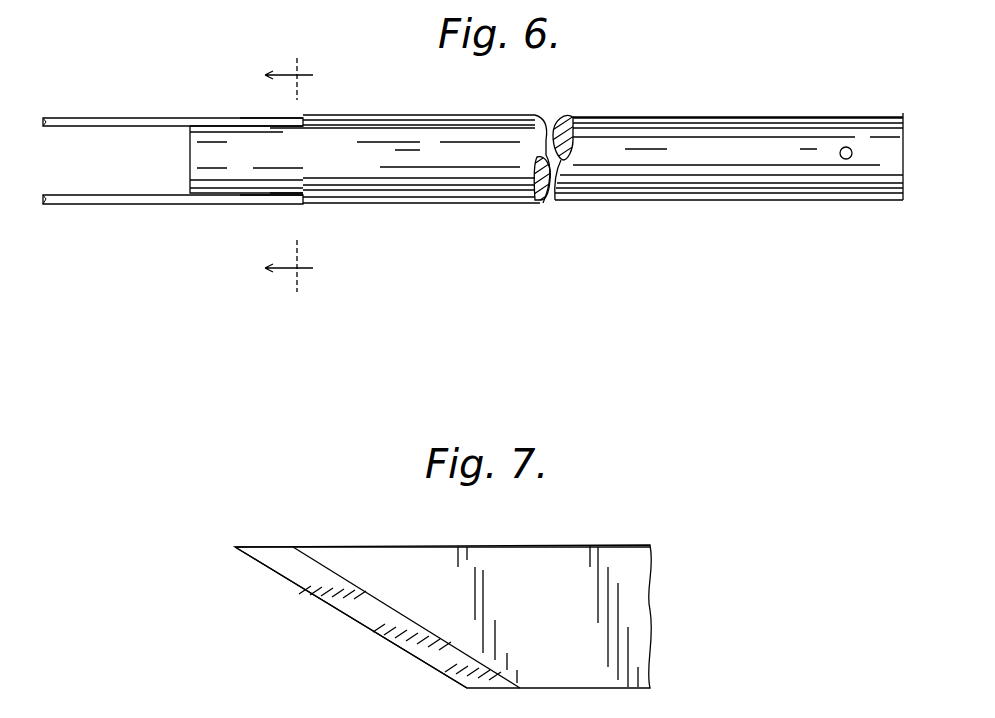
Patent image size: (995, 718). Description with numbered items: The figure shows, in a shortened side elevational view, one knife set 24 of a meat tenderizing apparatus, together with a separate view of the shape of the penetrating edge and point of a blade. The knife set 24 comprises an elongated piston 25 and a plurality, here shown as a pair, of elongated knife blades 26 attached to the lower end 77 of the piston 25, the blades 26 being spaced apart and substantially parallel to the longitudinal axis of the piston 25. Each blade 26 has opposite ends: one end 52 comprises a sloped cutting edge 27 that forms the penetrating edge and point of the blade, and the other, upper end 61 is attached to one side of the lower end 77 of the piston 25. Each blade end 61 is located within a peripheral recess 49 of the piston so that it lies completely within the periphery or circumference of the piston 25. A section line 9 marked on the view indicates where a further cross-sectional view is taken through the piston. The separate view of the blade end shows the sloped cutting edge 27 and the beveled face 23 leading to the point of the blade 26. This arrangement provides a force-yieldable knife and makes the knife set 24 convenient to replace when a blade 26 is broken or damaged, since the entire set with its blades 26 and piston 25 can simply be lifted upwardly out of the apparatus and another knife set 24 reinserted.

In FIG. 6, the section line 9- 9 is at (306, 175).
In FIG. 7, the beveled edge 23 is at (410, 622).
In FIG. 6, the knife set 24 is at (487, 213).
In FIG. 6, the piston 25 is at (598, 118).
In FIG. 6, the knife blade 26 is at (98, 120).
In FIG. 7, the knife blade 26 is at (568, 629).
In FIG. 7, the sloped cutting edge 27 is at (378, 633).
In FIG. 6, the peripheral recess 49 is at (281, 128).
In FIG. 7, the blade end 52 is at (373, 556).
In FIG. 6, the blade upper end 61 is at (257, 116).
In FIG. 6, the lower end of piston 77 is at (190, 159).